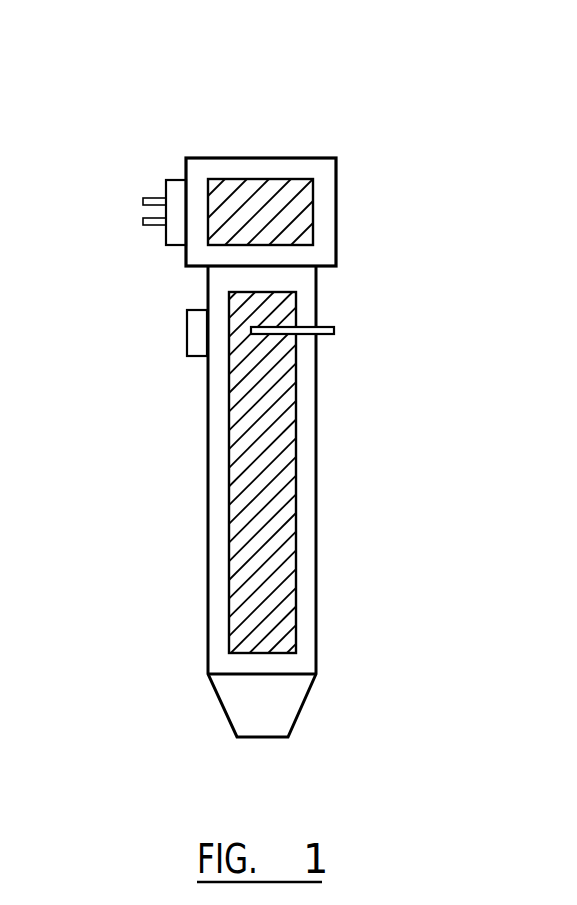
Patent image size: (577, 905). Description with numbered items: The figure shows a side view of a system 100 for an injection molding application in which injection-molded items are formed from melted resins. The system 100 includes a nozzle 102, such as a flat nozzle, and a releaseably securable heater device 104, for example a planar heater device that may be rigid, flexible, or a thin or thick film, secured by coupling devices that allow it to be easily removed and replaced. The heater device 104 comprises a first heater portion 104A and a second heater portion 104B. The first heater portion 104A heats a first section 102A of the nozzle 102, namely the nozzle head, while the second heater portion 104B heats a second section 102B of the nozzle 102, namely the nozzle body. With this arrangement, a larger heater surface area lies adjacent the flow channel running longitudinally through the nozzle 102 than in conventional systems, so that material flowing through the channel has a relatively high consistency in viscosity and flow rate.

The system 100 is at (428, 150).
The nozzle 102 is at (424, 452).
The first section 102A is at (252, 158).
The second section 102B is at (208, 562).
The heater device 104 is at (300, 236).
The first heater portion 104A is at (297, 207).
The second heater portion 104B is at (243, 308).